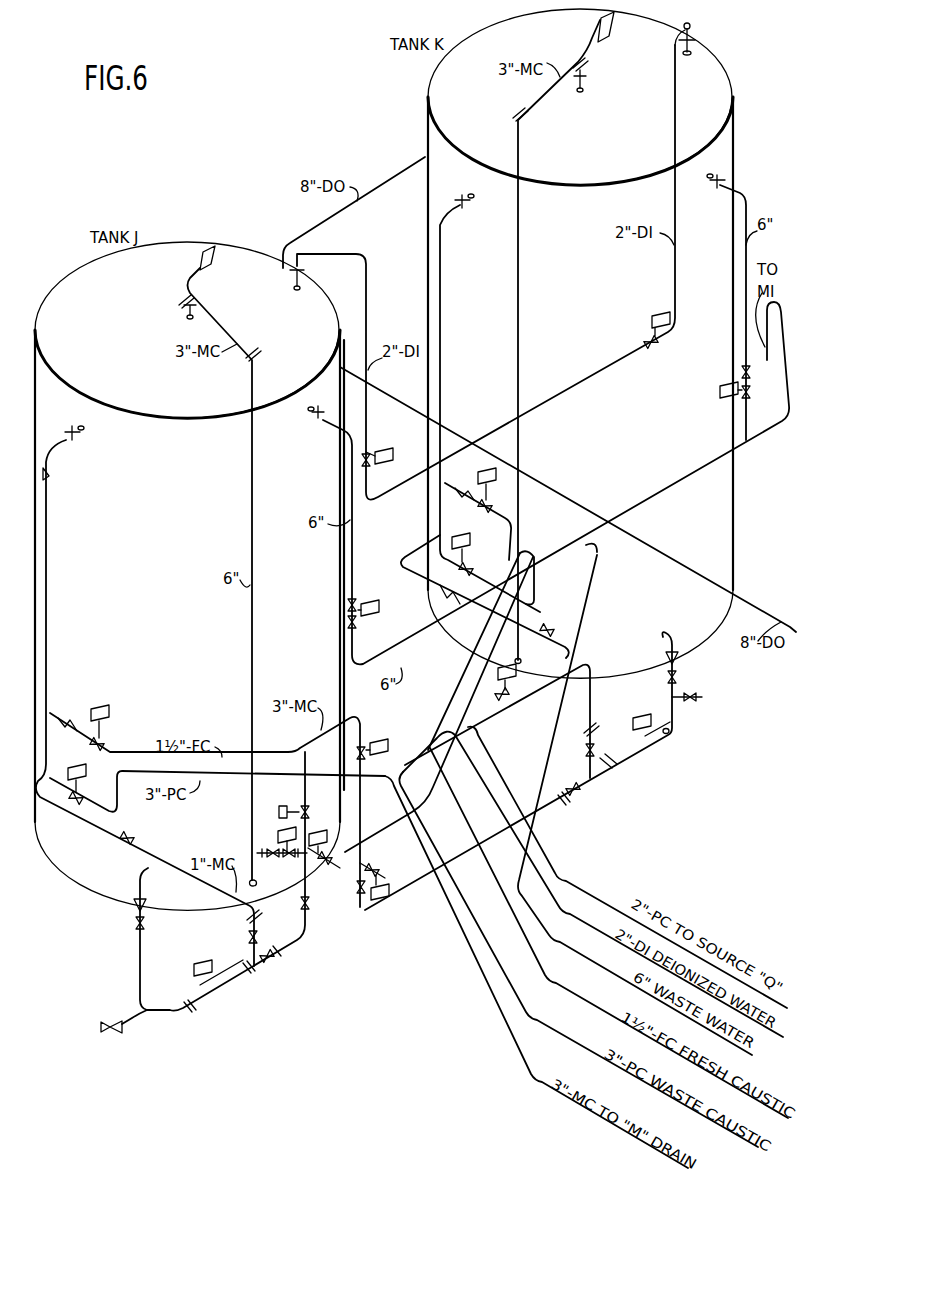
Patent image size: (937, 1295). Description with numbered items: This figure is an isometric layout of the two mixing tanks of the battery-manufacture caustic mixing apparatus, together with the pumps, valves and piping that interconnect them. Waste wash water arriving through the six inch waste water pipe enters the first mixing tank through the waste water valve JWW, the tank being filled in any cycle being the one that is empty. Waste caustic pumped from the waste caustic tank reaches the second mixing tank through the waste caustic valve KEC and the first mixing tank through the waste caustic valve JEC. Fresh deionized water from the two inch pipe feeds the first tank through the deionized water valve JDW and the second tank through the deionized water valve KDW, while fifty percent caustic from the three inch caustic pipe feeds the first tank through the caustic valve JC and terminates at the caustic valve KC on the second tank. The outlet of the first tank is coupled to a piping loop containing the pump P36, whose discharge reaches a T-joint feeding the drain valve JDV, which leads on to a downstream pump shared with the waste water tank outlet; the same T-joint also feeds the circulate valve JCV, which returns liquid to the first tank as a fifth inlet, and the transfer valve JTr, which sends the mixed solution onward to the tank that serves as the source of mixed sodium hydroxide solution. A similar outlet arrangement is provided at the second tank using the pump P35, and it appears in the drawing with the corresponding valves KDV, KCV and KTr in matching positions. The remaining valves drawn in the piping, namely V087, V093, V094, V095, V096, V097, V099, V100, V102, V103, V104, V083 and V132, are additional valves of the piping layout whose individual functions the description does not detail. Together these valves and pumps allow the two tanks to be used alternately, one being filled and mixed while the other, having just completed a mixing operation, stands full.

The deionized water valve JDW is at (395, 452).
The deionized water valve KDW is at (660, 312).
The waste water valve JWW is at (379, 614).
The caustic valve KC is at (492, 478).
The waste caustic valve KEC is at (468, 545).
The valve V087 is at (552, 628).
The Tank K control valve KCV is at (513, 680).
The valve V095 is at (678, 681).
The pump P35 is at (645, 716).
The valve V096 is at (703, 703).
The valve V094 is at (597, 760).
The valve V093 is at (578, 794).
The caustic valve JC is at (109, 716).
The waste caustic valve JEC is at (85, 774).
The Tank K drain valve KDV is at (387, 749).
The circulate valve JCV is at (280, 833).
The drain valve JDV is at (275, 812).
The valve V083 is at (265, 852).
The valve V132 is at (128, 842).
The valve V102 is at (132, 909).
The valve V104 is at (250, 936).
The valve V099 is at (310, 910).
The valve V100 is at (270, 962).
The valve V103 is at (113, 1036).
The pump P36 is at (200, 962).
The transfer valve JTr is at (330, 880).
The Tank K transfer valve KTr is at (381, 893).
The valve V097 is at (366, 900).